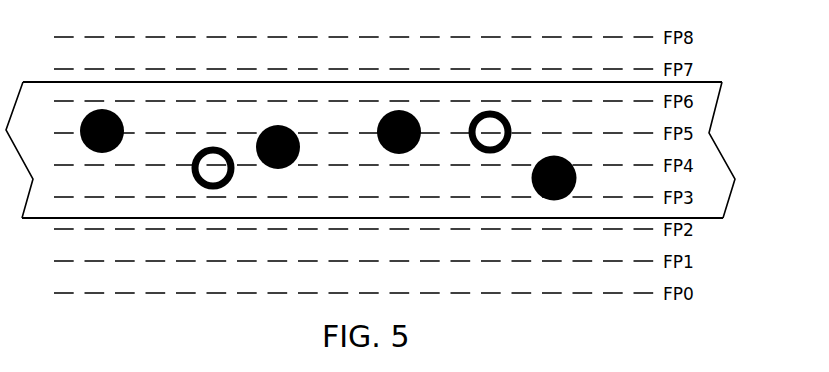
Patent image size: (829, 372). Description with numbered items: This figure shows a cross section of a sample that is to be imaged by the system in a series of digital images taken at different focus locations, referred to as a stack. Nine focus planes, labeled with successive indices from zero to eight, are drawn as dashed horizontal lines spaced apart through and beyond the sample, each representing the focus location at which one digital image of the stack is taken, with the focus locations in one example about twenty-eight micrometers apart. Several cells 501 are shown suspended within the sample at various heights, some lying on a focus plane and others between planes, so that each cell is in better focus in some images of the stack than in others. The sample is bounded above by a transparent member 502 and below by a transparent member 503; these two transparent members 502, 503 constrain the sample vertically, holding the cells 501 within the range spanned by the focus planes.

The cells 501 is at (399, 154).
The transparent member 502 is at (707, 82).
The transparent member 503 is at (707, 214).